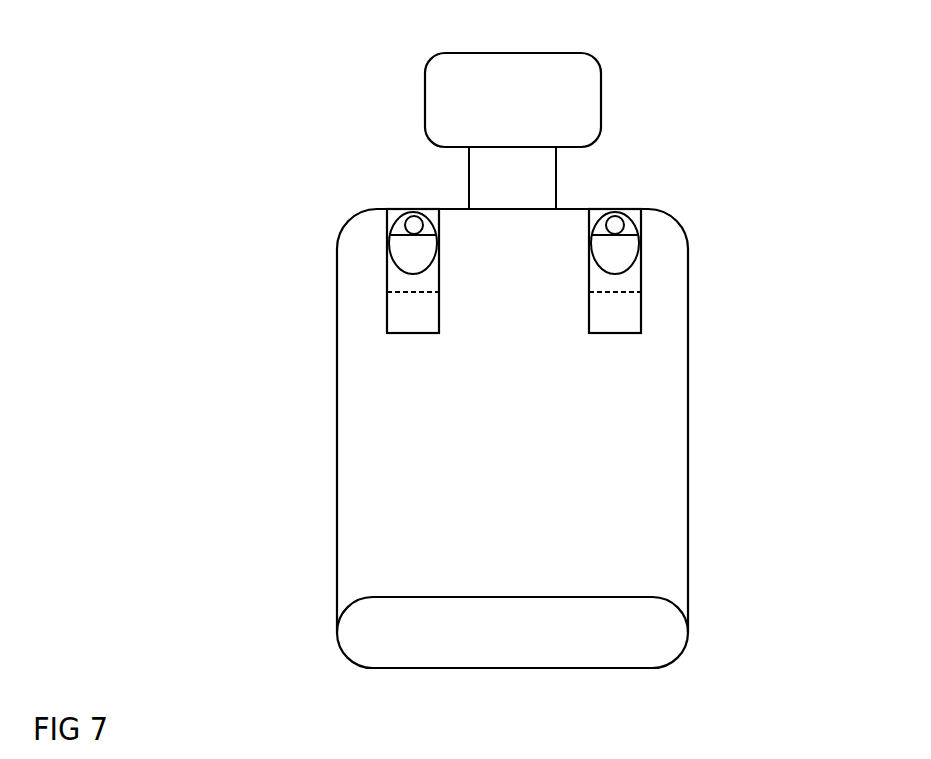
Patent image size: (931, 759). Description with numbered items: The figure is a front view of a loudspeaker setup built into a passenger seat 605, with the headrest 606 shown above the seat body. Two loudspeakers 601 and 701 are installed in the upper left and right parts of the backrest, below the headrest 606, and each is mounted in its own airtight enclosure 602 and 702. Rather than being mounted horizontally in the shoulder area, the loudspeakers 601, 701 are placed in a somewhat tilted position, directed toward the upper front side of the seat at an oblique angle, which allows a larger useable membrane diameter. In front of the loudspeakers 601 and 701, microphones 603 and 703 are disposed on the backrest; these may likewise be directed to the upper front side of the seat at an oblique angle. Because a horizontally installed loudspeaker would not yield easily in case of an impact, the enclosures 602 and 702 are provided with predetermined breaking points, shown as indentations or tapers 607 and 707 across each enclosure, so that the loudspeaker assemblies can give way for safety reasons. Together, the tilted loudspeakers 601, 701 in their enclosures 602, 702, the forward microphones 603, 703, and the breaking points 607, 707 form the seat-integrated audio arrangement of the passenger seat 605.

The loudspeaker 601 is at (392, 263).
The enclosure 602 is at (387, 323).
The microphone 603 is at (387, 209).
The passenger seat 605 is at (496, 580).
The headrest 606 is at (601, 97).
The taper 607 is at (392, 291).
The loudspeaker 701 is at (638, 268).
The enclosure 702 is at (642, 325).
The microphone 703 is at (645, 210).
The taper 707 is at (641, 293).